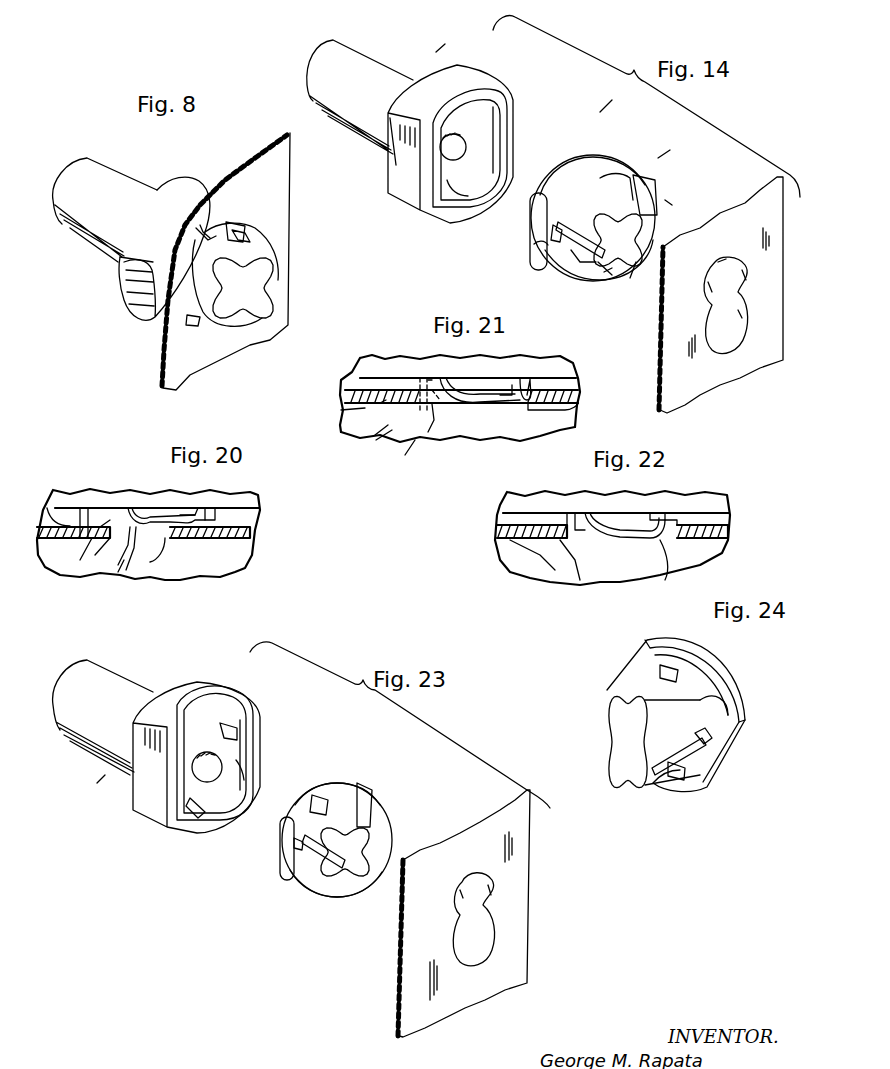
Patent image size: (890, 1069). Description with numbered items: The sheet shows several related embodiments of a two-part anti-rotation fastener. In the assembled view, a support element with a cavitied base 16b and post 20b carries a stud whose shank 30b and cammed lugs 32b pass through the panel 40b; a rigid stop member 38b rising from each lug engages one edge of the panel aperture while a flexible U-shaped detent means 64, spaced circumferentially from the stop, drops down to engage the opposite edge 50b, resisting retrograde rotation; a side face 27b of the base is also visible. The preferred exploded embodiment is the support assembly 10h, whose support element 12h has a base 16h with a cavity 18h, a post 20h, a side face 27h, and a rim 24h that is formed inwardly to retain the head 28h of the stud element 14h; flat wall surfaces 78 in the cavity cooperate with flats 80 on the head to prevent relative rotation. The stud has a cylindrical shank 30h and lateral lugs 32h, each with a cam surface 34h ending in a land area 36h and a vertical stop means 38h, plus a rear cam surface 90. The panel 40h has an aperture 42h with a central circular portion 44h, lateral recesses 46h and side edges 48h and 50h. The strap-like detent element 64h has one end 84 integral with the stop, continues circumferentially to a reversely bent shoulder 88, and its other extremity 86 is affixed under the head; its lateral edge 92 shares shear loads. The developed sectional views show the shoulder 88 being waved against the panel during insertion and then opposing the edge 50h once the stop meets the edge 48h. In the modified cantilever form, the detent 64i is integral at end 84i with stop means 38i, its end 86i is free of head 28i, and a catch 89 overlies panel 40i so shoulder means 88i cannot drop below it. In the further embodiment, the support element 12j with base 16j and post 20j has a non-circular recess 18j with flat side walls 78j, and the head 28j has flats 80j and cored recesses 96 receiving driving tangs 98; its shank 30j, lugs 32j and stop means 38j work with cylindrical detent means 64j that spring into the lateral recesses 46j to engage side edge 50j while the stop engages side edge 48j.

In FIG. 14, the support assembly 10h is at (611, 111).
In FIG. 14, the support element 12h is at (447, 50).
In FIG. 14, the stud element 14h is at (669, 158).
In FIG. 14, the base 16h is at (460, 77).
In FIG. 14, the cavity 18h is at (477, 168).
In FIG. 14, the post 20h is at (351, 52).
In FIG. 14, the rim 24h is at (456, 214).
In FIG. 14, the side face of head 27h is at (394, 164).
In FIG. 14, the head 28h is at (582, 160).
In FIG. 21, the head 28h is at (498, 367).
In FIG. 20, the head 28h is at (108, 497).
In FIG. 14, the shank 30h is at (635, 250).
In FIG. 14, the lugs 32h is at (604, 266).
In FIG. 21, the lugs 32h is at (382, 432).
In FIG. 20, the lugs 32h is at (88, 565).
In FIG. 21, the cam surface 34h is at (343, 414).
In FIG. 21, the land area 36h is at (386, 402).
In FIG. 20, the land area 36h is at (79, 521).
In FIG. 14, the stop means 38h is at (573, 258).
In FIG. 21, the stop means 38h is at (420, 388).
In FIG. 20, the stop means 38h is at (106, 528).
In FIG. 14, the panel 40h is at (737, 384).
In FIG. 21, the panel 40h is at (348, 393).
In FIG. 20, the panel 40h is at (250, 532).
In FIG. 14, the aperture 42h is at (705, 312).
In FIG. 14, the central circular portion 44h is at (739, 314).
In FIG. 14, the lateral recess 46h is at (719, 260).
In FIG. 14, the panel edge 48h is at (710, 278).
In FIG. 21, the panel edge 48h is at (424, 396).
In FIG. 20, the panel edge 48h is at (53, 510).
In FIG. 14, the panel edge 50h is at (746, 273).
In FIG. 21, the panel edge 50h is at (530, 410).
In FIG. 20, the panel edge 50h is at (165, 540).
In FIG. 14, the detent element 64h is at (556, 252).
In FIG. 21, the detent element 64h is at (466, 401).
In FIG. 20, the detent element 64h is at (149, 513).
In FIG. 14, the flat wall surfaces 78 is at (442, 208).
In FIG. 14, the flats 80 is at (626, 200).
In FIG. 21, the end of detent 84 is at (433, 404).
In FIG. 20, the end of detent 84 is at (134, 542).
In FIG. 14, the opposite extremity of detent 86 is at (556, 226).
In FIG. 21, the opposite extremity of detent 86 is at (528, 381).
In FIG. 20, the opposite extremity of detent 86 is at (214, 507).
In FIG. 21, the shoulder 88 is at (512, 385).
In FIG. 20, the shoulder 88 is at (189, 513).
In FIG. 14, the cam surface 90 is at (608, 274).
In FIG. 21, the cam surface 90 is at (410, 458).
In FIG. 20, the cam surface 90 is at (118, 572).
In FIG. 14, the lateral edge of detent 92 is at (534, 244).
In FIG. 8, the cavitied base 16b is at (132, 263).
In FIG. 8, the post 20b is at (95, 172).
In FIG. 8, the side face of head 27b is at (160, 318).
In FIG. 8, the shank 30b is at (258, 298).
In FIG. 8, the cammed lug 32b is at (272, 302).
In FIG. 8, the stop member 38b is at (204, 228).
In FIG. 8, the panel 40b is at (180, 368).
In FIG. 8, the edge of aperture 50b is at (242, 236).
In FIG. 8, the detent means 64 is at (195, 320).
In FIG. 22, the head 28i is at (691, 500).
In FIG. 22, the stop means 38i is at (561, 513).
In FIG. 22, the panel 40i is at (733, 532).
In FIG. 22, the detent 64i is at (622, 545).
In FIG. 22, the end of detent 84i is at (566, 583).
In FIG. 22, the opposite end of detent 86i is at (648, 513).
In FIG. 22, the shoulder means 88i is at (660, 545).
In FIG. 22, the catch 89 is at (681, 518).
In FIG. 23, the support element 12j is at (95, 793).
In FIG. 23, the head flange 16j is at (197, 686).
In FIG. 23, the non-circular recess 18j is at (229, 747).
In FIG. 23, the shank 20j is at (101, 681).
In FIG. 23, the head 28j is at (344, 775).
In FIG. 24, the head 28j is at (728, 682).
In FIG. 23, the central spring portion 30j is at (345, 852).
In FIG. 24, the central spring portion 30j is at (635, 752).
In FIG. 24, the lugs 32j is at (620, 783).
In FIG. 24, the stop means 38j is at (702, 707).
In FIG. 23, the lateral recesses 46j is at (471, 875).
In FIG. 23, the side edge 48j is at (461, 894).
In FIG. 23, the side edge 50j is at (488, 892).
In FIG. 23, the detent means 64j is at (294, 843).
In FIG. 24, the detent means 64j is at (698, 742).
In FIG. 23, the flat side walls 78j is at (241, 757).
In FIG. 23, the flats 80j is at (281, 870).
In FIG. 24, the flats 80j is at (726, 760).
In FIG. 23, the recesses 96 is at (321, 793).
In FIG. 24, the recesses 96 is at (668, 780).
In FIG. 23, the driving tangs 98 is at (200, 810).